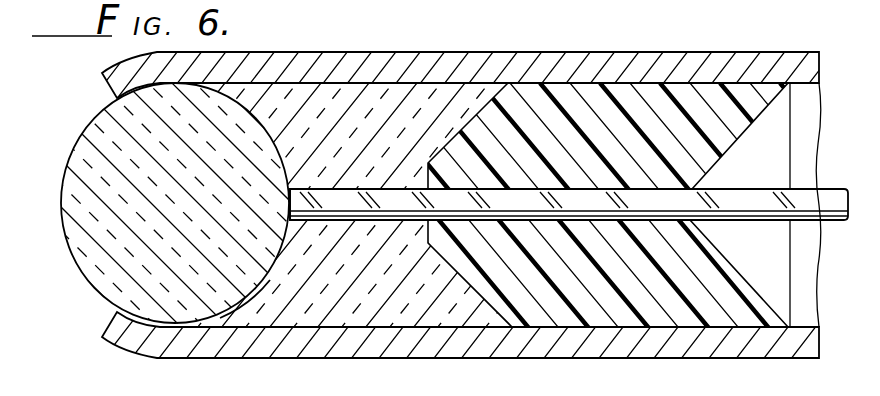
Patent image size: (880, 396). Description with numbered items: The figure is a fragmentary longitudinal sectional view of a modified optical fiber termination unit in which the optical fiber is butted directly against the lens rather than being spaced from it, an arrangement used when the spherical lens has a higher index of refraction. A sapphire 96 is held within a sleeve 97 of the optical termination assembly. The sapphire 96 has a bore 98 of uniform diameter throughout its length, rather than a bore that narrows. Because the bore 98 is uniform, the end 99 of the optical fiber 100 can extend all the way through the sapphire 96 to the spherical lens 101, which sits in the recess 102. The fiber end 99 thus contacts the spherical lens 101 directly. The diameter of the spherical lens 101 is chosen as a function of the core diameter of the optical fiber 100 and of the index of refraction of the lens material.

The sapphire 96 is at (352, 327).
The sleeve 97 is at (439, 52).
The bore 98 is at (329, 190).
The end of the optical fiber 99 is at (290, 202).
The optical fiber 100 is at (563, 189).
The spherical lens 101 is at (74, 258).
The recess 102 is at (257, 285).